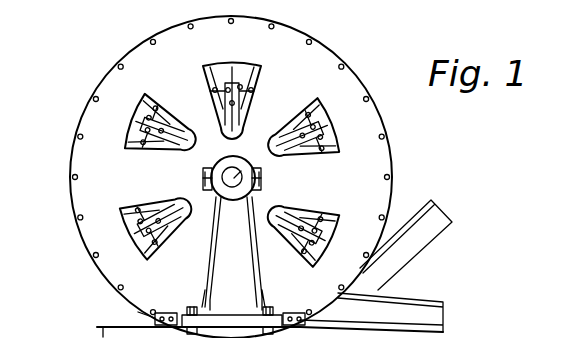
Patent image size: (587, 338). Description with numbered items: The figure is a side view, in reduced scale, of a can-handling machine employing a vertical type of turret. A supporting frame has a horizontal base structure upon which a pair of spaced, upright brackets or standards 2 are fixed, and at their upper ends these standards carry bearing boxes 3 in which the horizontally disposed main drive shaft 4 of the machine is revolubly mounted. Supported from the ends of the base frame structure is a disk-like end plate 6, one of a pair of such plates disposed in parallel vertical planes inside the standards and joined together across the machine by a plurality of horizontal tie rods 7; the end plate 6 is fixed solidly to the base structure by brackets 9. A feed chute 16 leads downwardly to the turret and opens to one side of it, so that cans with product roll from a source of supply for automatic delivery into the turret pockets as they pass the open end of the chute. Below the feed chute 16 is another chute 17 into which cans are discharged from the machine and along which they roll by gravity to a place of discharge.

The upright bracket or standard 2 is at (225, 272).
The bearing box 3 is at (243, 160).
The main drive shaft 4 is at (262, 178).
The disk-like end plate 6 is at (72, 193).
The horizontal tie rod 7 is at (385, 138).
The bracket 9 is at (128, 307).
The feed chute 16 is at (434, 237).
The discharge chute 17 is at (408, 300).